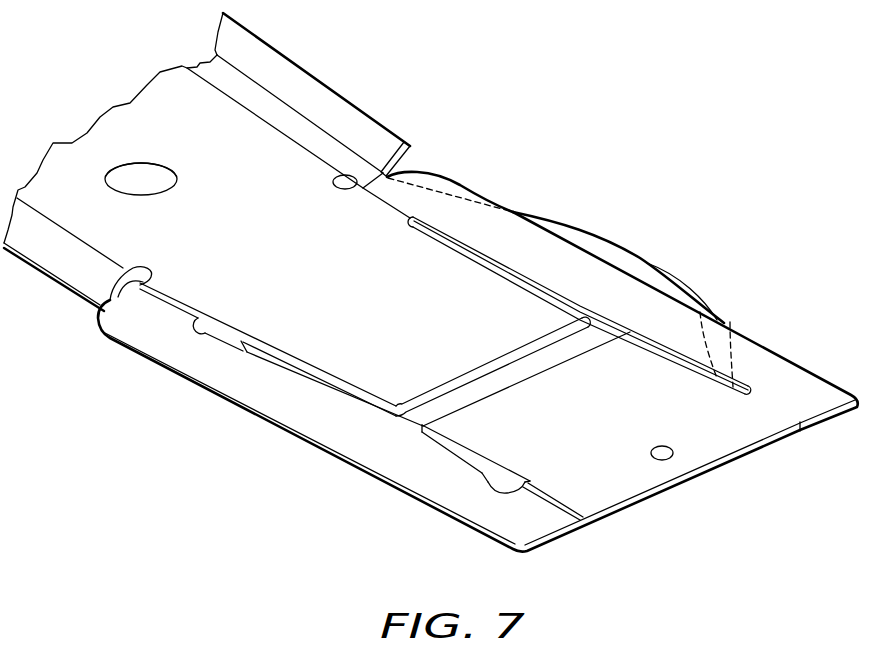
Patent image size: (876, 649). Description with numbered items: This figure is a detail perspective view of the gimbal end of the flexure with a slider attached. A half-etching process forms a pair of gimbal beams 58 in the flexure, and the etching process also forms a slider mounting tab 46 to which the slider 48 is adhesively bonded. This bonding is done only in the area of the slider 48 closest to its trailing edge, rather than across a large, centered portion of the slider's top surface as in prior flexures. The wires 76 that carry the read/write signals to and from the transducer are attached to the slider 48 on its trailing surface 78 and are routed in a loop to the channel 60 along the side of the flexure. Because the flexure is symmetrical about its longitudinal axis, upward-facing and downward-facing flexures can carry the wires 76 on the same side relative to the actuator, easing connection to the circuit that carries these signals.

The channel 60 is at (358, 130).
The wires 76 is at (627, 247).
The gimbal beams 58 is at (238, 395).
The slider 48 is at (397, 423).
The slider mounting tab 46 is at (483, 428).
The trailing surface 78 is at (505, 485).